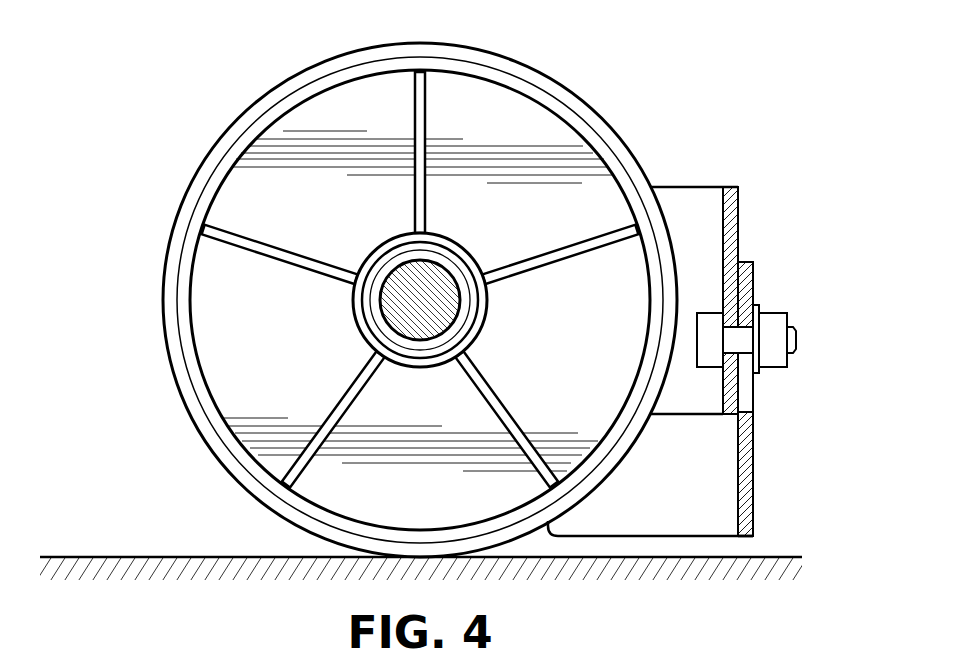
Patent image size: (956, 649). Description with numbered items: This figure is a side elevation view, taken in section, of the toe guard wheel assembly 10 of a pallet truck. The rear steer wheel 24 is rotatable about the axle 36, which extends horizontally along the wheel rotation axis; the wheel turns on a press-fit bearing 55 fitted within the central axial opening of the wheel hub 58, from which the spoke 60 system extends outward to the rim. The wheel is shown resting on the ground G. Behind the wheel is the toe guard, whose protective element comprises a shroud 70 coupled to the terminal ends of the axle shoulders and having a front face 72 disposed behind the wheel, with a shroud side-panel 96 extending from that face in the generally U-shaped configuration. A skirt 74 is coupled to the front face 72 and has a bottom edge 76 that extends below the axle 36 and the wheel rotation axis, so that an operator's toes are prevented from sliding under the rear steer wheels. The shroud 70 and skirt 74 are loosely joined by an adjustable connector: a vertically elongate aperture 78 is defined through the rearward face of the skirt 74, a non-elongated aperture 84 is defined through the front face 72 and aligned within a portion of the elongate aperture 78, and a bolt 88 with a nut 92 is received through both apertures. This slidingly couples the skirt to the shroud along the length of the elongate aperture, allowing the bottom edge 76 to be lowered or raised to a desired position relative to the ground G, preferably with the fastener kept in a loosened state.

The toe guard wheel assembly 10 is at (418, 287).
The rear steer wheel 24 is at (560, 84).
The axle 36 is at (421, 341).
The press-fit bearing 55 is at (393, 258).
The wheel hub 58 is at (484, 323).
The spoke 60 is at (578, 244).
The shroud 70 is at (700, 326).
The front face 72 is at (740, 226).
The skirt 74 is at (764, 470).
The bottom edge 76 is at (746, 537).
The elongate aperture 78 is at (752, 410).
The non-elongated aperture 84 is at (732, 323).
The bolt 88 is at (698, 360).
The nut 92 is at (782, 308).
The shroud side-panel 96 is at (696, 205).
The ground G is at (137, 557).